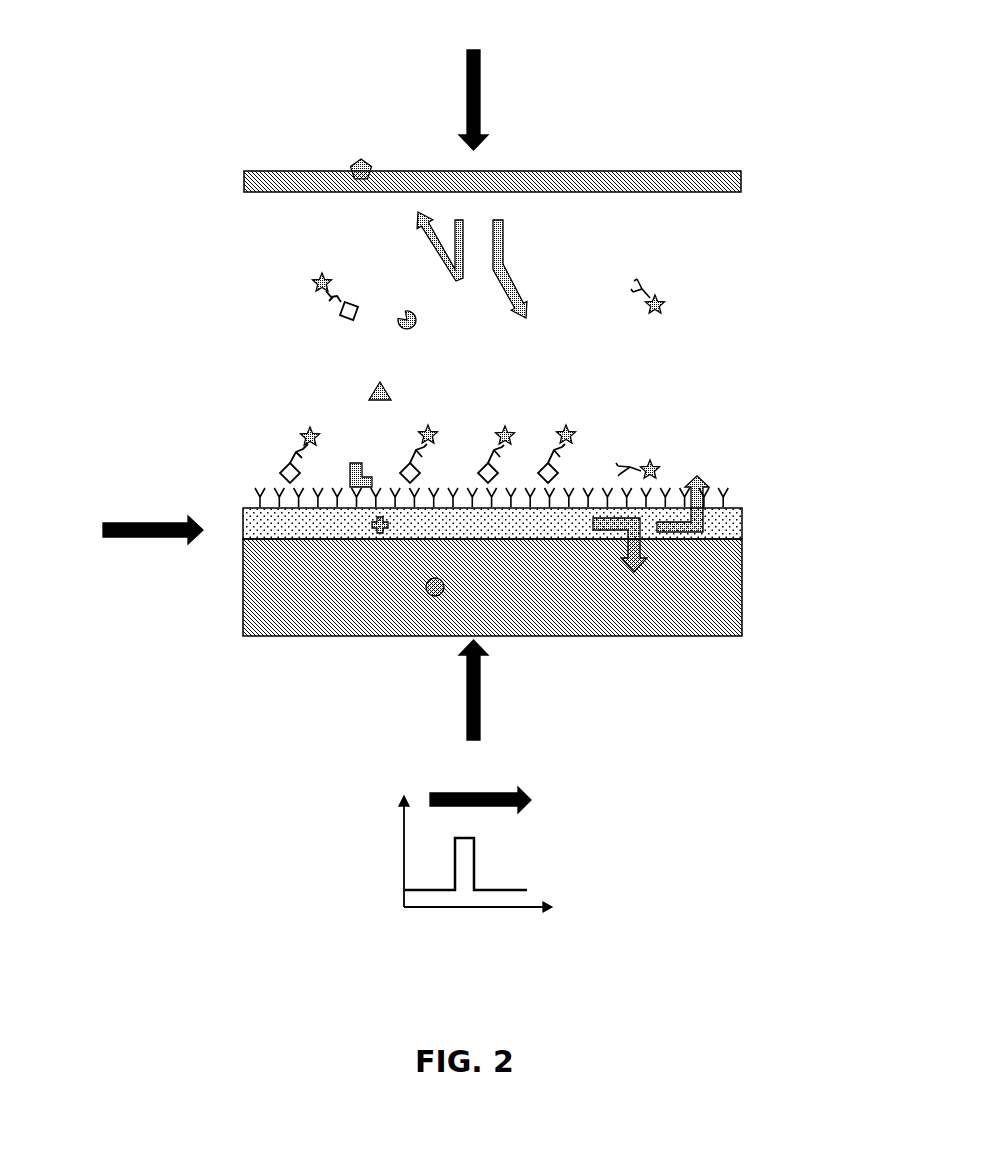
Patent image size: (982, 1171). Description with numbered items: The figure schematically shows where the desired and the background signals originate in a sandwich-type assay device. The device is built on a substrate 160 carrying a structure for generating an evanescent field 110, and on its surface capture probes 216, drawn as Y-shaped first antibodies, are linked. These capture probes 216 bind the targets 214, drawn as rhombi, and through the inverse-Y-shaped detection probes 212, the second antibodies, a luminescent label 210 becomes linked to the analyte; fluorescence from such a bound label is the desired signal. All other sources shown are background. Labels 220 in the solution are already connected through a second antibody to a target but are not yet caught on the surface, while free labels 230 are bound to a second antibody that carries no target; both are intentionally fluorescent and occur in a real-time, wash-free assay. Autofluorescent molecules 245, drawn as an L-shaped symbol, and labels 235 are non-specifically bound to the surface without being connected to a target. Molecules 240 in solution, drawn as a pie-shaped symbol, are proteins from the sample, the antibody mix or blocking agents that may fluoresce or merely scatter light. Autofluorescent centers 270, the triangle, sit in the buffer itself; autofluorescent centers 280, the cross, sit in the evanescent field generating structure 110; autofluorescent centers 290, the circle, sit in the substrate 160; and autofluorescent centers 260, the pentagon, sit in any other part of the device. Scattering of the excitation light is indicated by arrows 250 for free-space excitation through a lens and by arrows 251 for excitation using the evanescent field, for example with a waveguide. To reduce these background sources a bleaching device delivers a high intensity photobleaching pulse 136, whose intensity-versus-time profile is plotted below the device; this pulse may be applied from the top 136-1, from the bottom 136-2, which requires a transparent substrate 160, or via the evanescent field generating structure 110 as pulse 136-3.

The photobleaching pulse from the top 136-1 is at (467, 102).
The photobleaching pulse from the bottom 136-2 is at (463, 699).
The photobleaching pulse via the evanescent field generating structure 136-3 is at (140, 522).
The photobleaching pulse 136 is at (387, 792).
The autofluorescent centers in other device parts 260 is at (352, 162).
The molecules in solution 240 is at (400, 313).
The labels bound to target in solution 220 is at (312, 280).
The scattering of excitation light in free space excitation 250 is at (502, 248).
The free labels in solution 230 is at (660, 298).
The autofluorescent centers in the solution 270 is at (370, 390).
The autofluorescent molecules bound to the surface 245 is at (348, 463).
The luminescent label 210 is at (298, 430).
The detection probes 212 is at (290, 447).
The targets 214 is at (278, 465).
The capture probes 216 is at (253, 488).
The autofluorescent centers in the evanescent field generating structure 280 is at (370, 527).
The autofluorescent centers in the substrate 290 is at (428, 592).
The substrate 160 is at (697, 570).
The structure for generating an evanescent field 110 is at (723, 513).
The scattering of excitation light in evanescent field excitation 251 is at (660, 528).
The labels non-specifically bound to the surface 235 is at (660, 459).